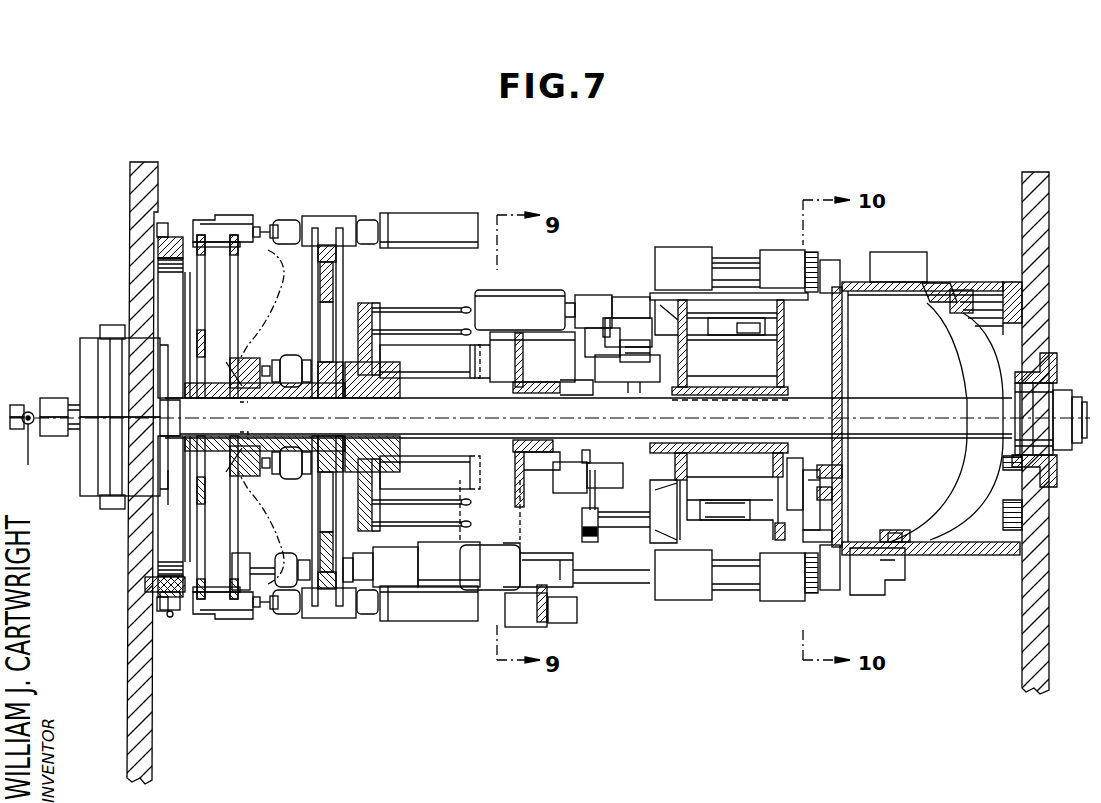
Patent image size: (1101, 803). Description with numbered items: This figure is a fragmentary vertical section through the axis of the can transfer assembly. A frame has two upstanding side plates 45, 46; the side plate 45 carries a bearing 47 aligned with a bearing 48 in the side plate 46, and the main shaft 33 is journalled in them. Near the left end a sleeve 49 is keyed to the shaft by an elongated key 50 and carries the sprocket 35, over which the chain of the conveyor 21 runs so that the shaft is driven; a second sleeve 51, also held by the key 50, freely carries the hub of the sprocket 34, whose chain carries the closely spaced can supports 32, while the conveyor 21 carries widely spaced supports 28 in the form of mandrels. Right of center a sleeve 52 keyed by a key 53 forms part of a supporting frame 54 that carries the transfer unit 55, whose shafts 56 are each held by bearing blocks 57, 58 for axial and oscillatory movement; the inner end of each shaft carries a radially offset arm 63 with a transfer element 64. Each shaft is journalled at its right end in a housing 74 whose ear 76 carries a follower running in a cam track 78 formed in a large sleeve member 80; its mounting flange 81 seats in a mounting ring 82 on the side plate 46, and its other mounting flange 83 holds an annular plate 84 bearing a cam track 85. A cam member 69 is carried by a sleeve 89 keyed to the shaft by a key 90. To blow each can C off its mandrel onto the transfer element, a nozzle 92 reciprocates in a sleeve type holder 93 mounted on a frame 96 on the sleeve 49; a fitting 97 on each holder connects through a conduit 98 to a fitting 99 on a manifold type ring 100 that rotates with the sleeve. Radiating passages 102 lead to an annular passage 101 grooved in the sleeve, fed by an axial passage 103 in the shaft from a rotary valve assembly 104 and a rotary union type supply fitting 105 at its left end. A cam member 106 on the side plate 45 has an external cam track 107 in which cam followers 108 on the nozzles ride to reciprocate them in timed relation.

The conveyor 21 is at (325, 215).
The supports (mandrels) 28 is at (418, 215).
The can supports (holders) 32 is at (400, 308).
The main shaft 33 is at (880, 400).
The sprocket 34 is at (366, 304).
The sprocket 35 is at (328, 262).
The side plate 45 is at (130, 166).
The side plate 46 is at (1022, 192).
The bearing 47 is at (170, 485).
The bearing 48 is at (1055, 372).
The sleeve 49 is at (292, 440).
The key 50 is at (375, 390).
The second sleeve 51 is at (373, 445).
The sleeve 52 is at (778, 440).
The key 53 is at (724, 397).
The supporting frame 54 is at (690, 370).
The transfer unit 55 is at (730, 252).
The shafts 56 is at (724, 602).
The bearing block 57 is at (674, 247).
The bearing block 58 is at (778, 252).
The radially offset arm 63 is at (582, 500).
The transfer element 64 is at (628, 460).
The cam member 69 is at (520, 503).
The housing 74 is at (886, 252).
The ear 76 is at (937, 283).
The cam track 78 is at (955, 292).
The sleeve member 80 is at (988, 285).
The mounting flange 81 is at (992, 545).
The mounting ring 82 is at (1030, 518).
The second mounting flange 83 is at (846, 522).
The plate 84 is at (842, 368).
The cam track 85 is at (842, 476).
The sleeve 89 is at (548, 440).
The key 90 is at (520, 393).
The nozzle 92 is at (268, 225).
The sleeve type holder 93 is at (225, 215).
The frame 96 is at (217, 287).
The fitting 97 is at (262, 282).
The conduit 98 is at (270, 290).
The fitting 99 is at (262, 320).
The manifold type ring 100 is at (218, 352).
The annular passage 101 is at (242, 415).
The radiating passages 102 is at (248, 478).
The passage 103 is at (180, 412).
The rotary valve assembly 104 is at (98, 326).
The rotary union type supply fitting 105 is at (28, 410).
The cam member 106 is at (150, 580).
The cam track 107 is at (158, 260).
The cam followers 108 is at (160, 245).
The can C is at (507, 302).